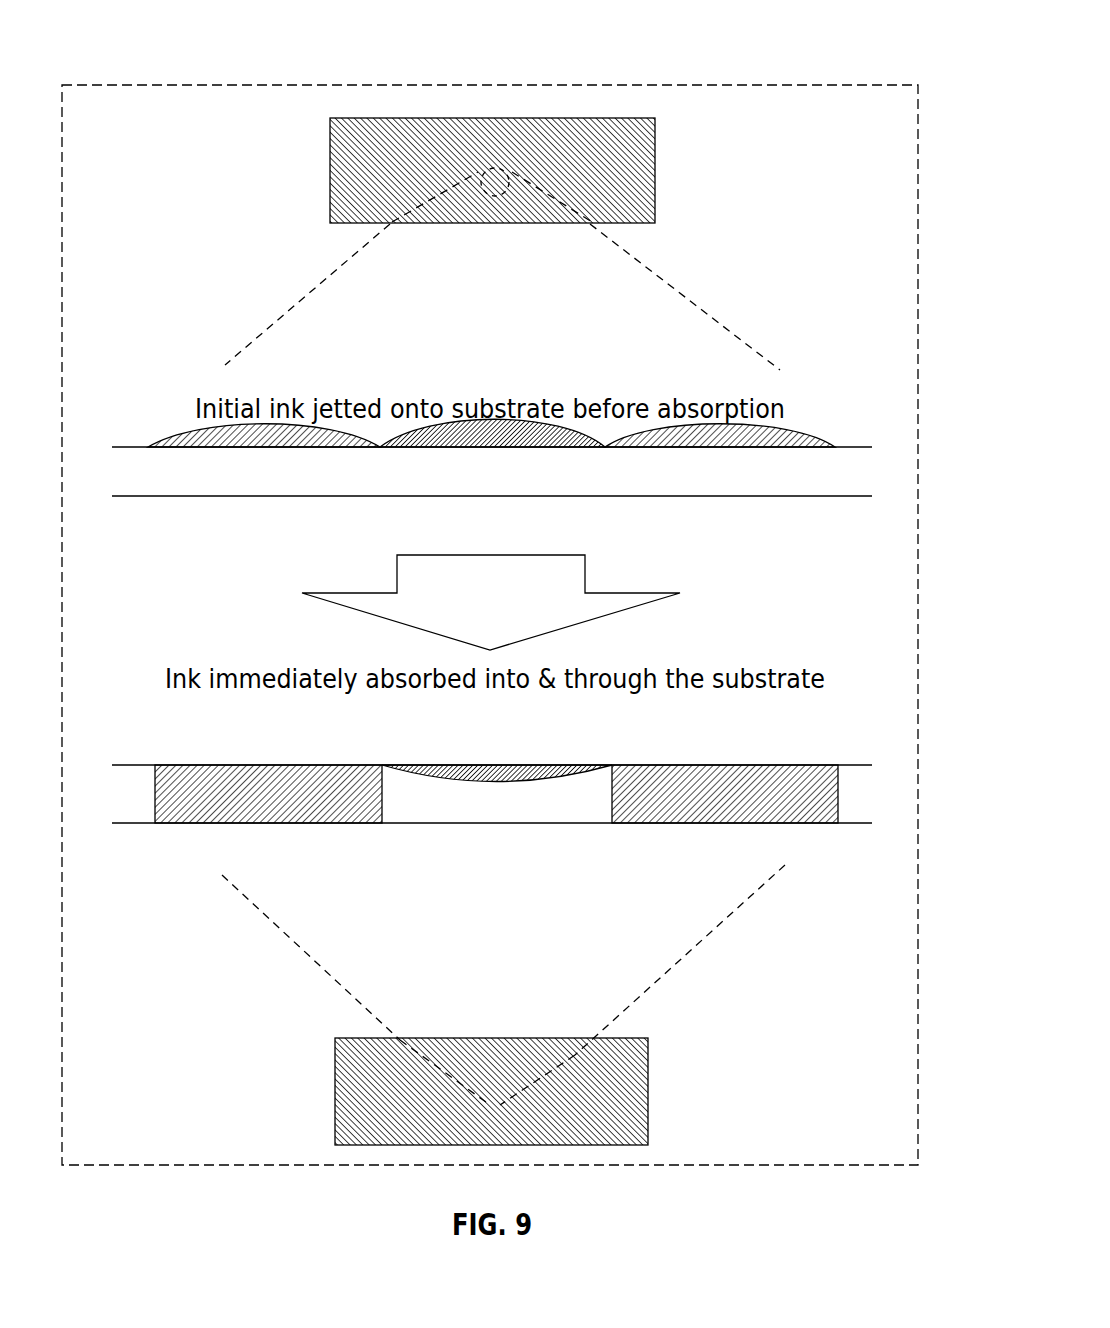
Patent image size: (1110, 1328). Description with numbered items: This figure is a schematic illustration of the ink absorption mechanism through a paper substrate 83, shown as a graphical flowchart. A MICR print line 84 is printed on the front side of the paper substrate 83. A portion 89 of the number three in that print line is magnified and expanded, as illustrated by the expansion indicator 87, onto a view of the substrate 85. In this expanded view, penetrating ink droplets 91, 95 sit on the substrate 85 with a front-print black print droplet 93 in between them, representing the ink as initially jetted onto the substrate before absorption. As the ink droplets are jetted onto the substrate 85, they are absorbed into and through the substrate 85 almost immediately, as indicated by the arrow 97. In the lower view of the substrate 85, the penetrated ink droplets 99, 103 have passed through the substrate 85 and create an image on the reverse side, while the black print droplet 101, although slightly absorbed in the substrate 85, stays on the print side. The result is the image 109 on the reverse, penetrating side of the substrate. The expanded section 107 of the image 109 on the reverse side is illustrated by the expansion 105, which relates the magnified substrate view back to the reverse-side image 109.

The paper substrate 83 is at (800, 84).
The MICR print line 84 is at (597, 118).
The substrate 85 is at (887, 460).
The expansion indicator 87 is at (685, 286).
The portion of the number 3 89 is at (495, 190).
The penetrating ink droplet 91 is at (192, 424).
The black print droplet 93 is at (565, 426).
The penetrating ink droplet 95 is at (812, 425).
The arrow 97 is at (628, 590).
The penetrated ink droplet 99 is at (212, 763).
The black print droplet 101 is at (562, 763).
The penetrated ink droplet 103 is at (783, 763).
The expansion 105 is at (672, 962).
The expanded section 107 is at (488, 1068).
The image 109 is at (648, 1062).